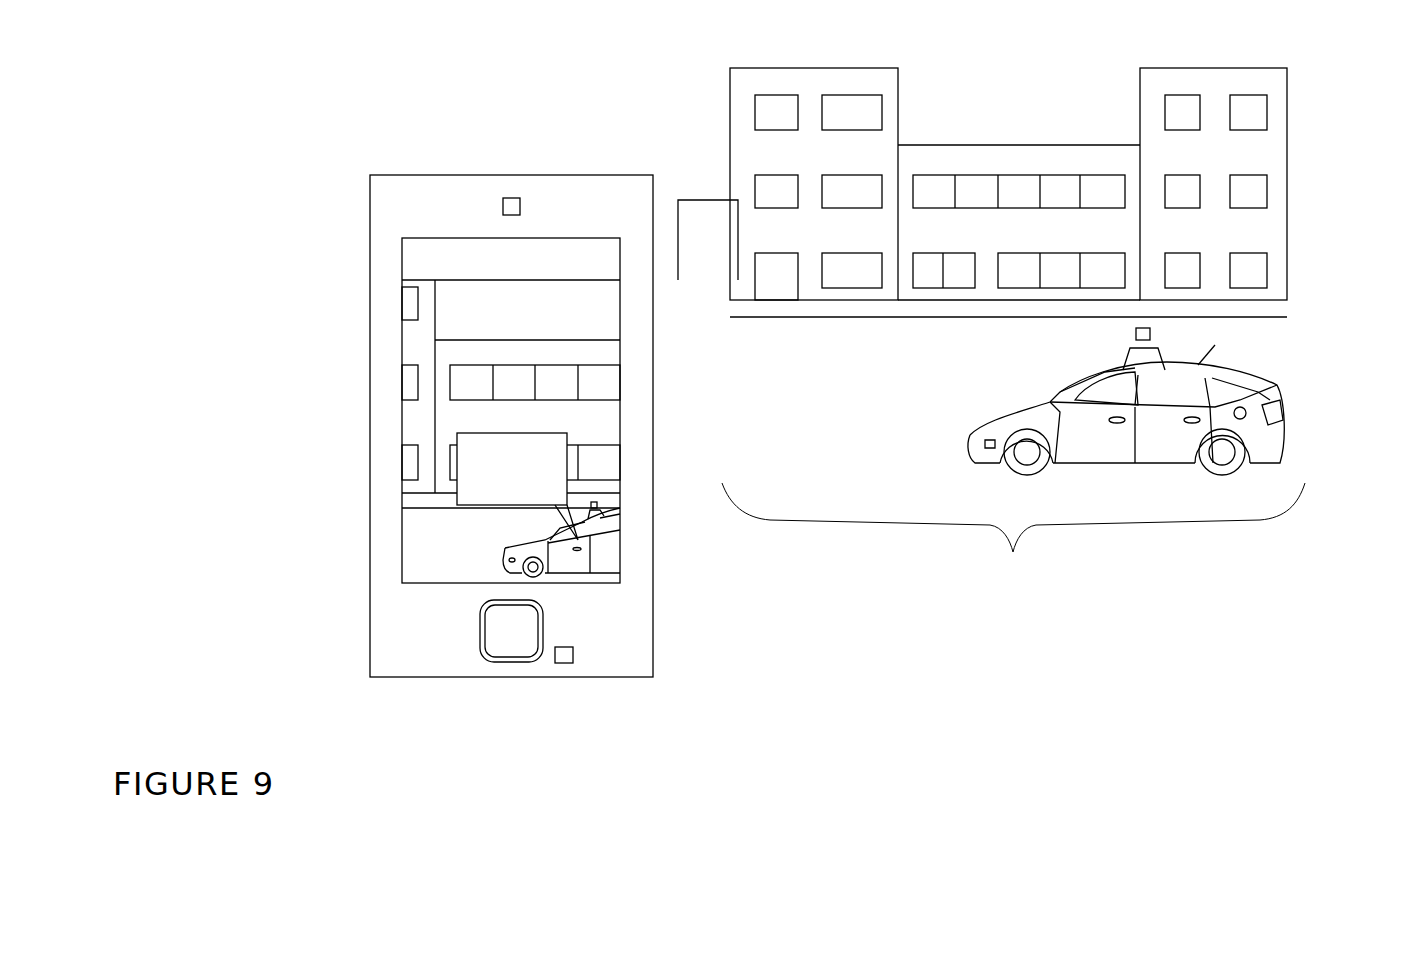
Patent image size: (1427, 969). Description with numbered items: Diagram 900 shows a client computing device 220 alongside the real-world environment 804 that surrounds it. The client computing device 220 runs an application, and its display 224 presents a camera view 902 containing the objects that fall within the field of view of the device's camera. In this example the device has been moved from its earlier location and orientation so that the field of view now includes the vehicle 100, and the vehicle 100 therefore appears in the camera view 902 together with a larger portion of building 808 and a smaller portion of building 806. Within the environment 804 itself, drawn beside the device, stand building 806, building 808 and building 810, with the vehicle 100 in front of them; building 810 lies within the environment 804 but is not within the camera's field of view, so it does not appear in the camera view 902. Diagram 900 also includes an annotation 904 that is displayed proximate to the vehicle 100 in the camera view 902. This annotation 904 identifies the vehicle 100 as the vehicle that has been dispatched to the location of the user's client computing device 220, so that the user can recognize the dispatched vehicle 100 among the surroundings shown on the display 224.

The diagram 900 is at (213, 740).
The client computing device 220 is at (369, 214).
The display 224 is at (402, 280).
The camera view 902 is at (402, 362).
The building 806 is at (423, 422).
The building 808 is at (450, 462).
The building 810 is at (1289, 150).
The annotation 904 is at (455, 490).
The vehicle 100 is at (503, 558).
The environment 804 is at (1013, 539).